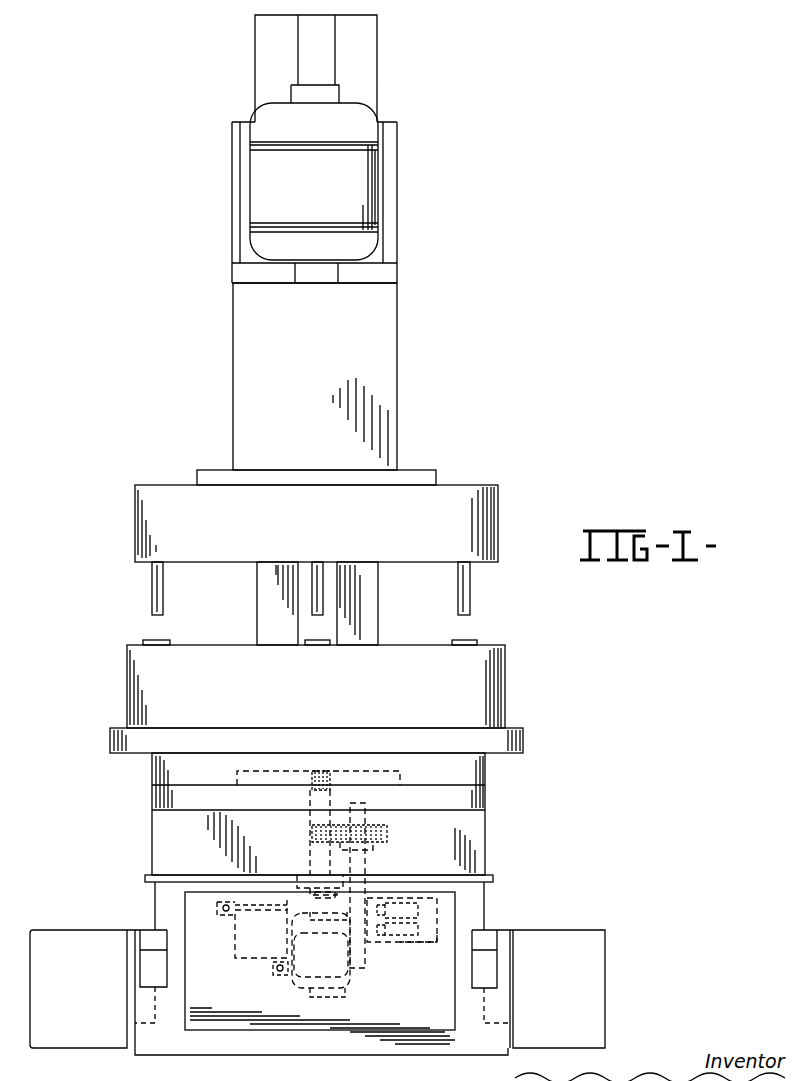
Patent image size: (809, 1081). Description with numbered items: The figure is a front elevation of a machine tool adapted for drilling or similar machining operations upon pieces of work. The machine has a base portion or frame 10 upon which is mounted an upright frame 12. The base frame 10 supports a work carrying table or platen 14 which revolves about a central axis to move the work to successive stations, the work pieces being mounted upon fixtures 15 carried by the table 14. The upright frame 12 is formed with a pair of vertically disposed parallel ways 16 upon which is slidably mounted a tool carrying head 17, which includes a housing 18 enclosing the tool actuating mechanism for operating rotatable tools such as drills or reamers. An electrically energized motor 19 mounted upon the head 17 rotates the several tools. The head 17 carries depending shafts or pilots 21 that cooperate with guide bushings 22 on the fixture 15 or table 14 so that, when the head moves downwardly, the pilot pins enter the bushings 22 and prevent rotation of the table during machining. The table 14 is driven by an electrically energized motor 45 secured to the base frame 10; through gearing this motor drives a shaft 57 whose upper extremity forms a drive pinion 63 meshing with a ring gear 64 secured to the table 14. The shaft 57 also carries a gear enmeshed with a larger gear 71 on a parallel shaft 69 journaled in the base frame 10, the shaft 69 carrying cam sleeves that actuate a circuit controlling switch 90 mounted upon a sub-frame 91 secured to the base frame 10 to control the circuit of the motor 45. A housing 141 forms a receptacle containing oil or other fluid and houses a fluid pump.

The base portion or frame 10 is at (484, 900).
The upright frame 12 is at (372, 70).
The work carrying table or platen 14 is at (523, 731).
The work supporting fixture 15 is at (505, 672).
The parallel ways 16 is at (260, 595).
The tool carrying head 17 is at (498, 497).
The housing 18 is at (390, 372).
The motor 19 is at (368, 178).
The depending shafts or pilots 21 is at (152, 598).
The guide bushings 22 is at (150, 640).
The motor 45 is at (348, 978).
The shaft 57 is at (310, 858).
The drive pinion 63 is at (330, 775).
The ring gear 64 is at (400, 778).
The shaft 69 is at (370, 858).
The gear 71 is at (390, 835).
The circuit controlling switch 90 is at (400, 942).
The sub-frame 91 is at (437, 940).
The housing 141 is at (252, 960).